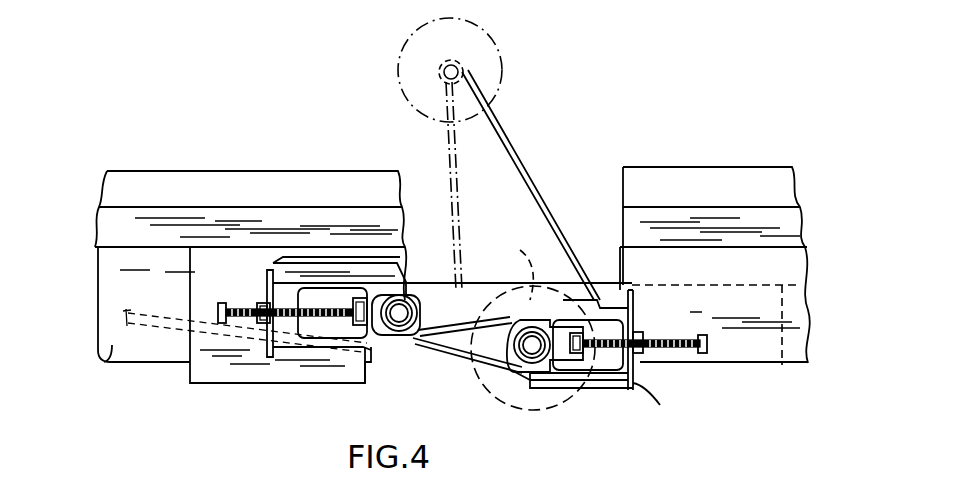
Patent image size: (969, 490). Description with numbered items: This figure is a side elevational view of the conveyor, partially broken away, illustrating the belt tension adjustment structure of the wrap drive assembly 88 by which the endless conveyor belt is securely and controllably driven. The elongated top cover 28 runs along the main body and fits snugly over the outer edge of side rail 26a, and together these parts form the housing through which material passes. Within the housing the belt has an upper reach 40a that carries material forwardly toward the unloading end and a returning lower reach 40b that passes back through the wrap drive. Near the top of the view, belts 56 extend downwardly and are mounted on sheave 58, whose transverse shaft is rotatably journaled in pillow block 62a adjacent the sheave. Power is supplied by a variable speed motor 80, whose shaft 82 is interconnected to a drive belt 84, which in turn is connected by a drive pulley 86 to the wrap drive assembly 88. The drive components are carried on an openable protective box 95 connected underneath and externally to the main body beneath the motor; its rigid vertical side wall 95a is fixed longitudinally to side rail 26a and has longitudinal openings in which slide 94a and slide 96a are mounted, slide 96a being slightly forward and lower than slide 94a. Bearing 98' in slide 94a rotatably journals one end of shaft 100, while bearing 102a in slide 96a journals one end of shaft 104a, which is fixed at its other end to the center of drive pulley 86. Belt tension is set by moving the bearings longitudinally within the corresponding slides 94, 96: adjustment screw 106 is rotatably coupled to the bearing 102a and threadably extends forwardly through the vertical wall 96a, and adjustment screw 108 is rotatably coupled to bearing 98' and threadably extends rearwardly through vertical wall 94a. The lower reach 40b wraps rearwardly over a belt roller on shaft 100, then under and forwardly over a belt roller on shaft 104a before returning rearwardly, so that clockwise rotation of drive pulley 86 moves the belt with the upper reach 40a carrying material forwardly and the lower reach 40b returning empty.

The top cover 28 is at (208, 190).
The side rail 26a is at (122, 340).
The upper reach 40a is at (602, 255).
The lower reach 40b is at (782, 365).
The belts 56 is at (281, 17).
The sheave 58 is at (226, 9).
The pillow block 62a is at (316, 0).
The variable speed motor 80 is at (478, 46).
The shaft 82 is at (466, 75).
The drive belt 84 is at (512, 152).
The drive pulley 86 is at (530, 255).
The wrap drive assembly 88 is at (496, 403).
The slide 94 is at (298, 348).
The slide 94a is at (268, 350).
The openable protective box 95 is at (296, 386).
The side wall 95a is at (203, 370).
The slide 96 is at (612, 388).
The slide 96a is at (660, 405).
The bearing 98' is at (465, 367).
The shaft 100 is at (399, 313).
The bearing 102a is at (566, 362).
The shaft 104a is at (532, 348).
The adjustment screw 106 is at (693, 355).
The adjustment screw 108 is at (247, 300).